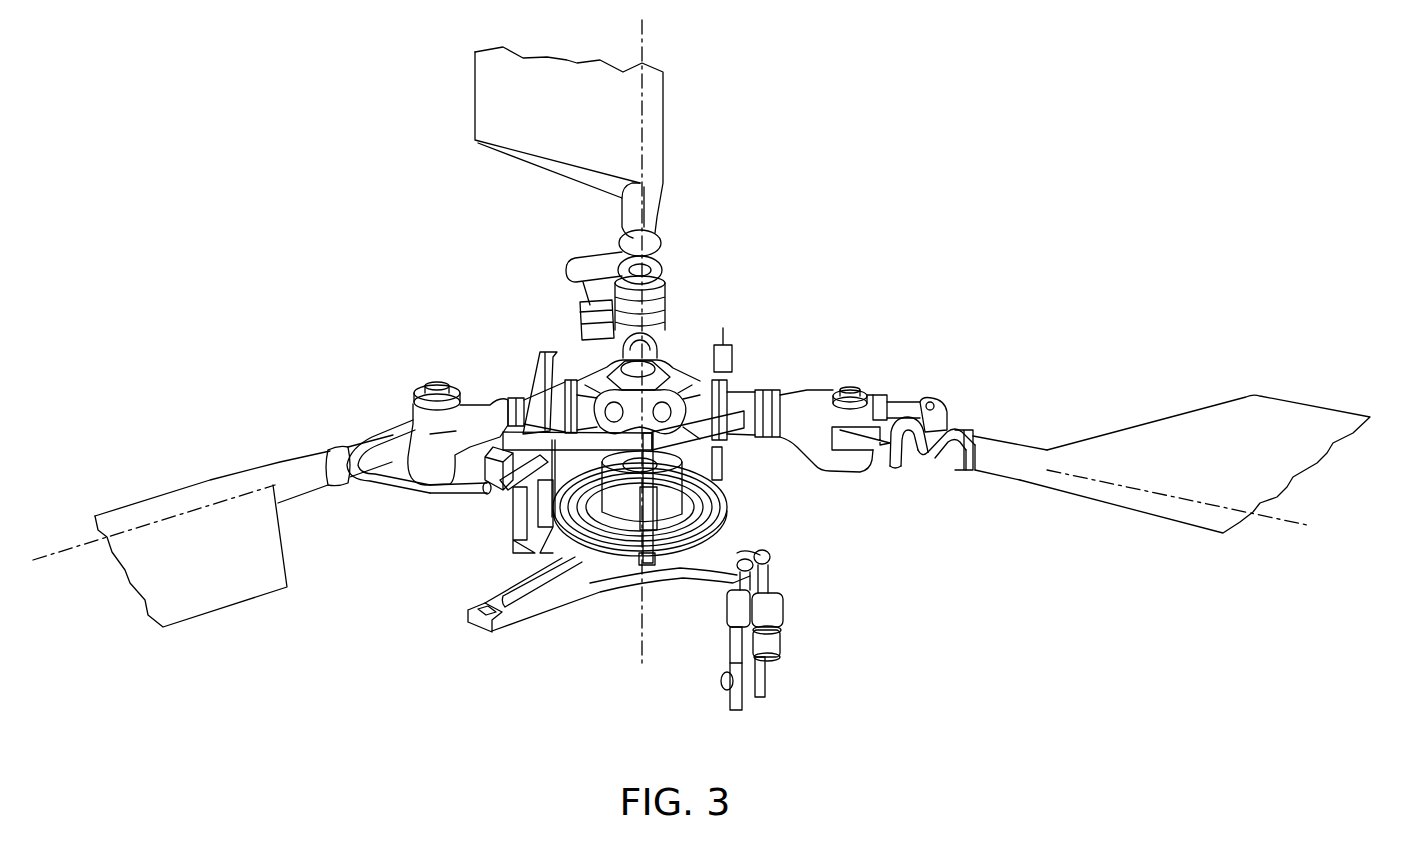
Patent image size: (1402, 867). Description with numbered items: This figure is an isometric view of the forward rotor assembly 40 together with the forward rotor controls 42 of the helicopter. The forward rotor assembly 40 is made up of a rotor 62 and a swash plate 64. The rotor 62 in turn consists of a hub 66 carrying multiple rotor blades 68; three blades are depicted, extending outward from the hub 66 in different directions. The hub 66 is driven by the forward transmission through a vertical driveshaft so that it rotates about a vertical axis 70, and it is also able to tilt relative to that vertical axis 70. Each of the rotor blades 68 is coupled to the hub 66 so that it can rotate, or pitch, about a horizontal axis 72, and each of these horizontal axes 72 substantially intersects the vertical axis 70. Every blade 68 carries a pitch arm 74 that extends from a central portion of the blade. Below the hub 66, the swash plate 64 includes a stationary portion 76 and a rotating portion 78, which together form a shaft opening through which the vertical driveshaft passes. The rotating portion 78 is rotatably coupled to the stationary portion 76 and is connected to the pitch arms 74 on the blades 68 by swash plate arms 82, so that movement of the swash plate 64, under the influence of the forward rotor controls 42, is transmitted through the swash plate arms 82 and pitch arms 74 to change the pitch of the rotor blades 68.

The forward rotor assembly 40 is at (793, 302).
The forward rotor controls 42 is at (795, 637).
The rotor 62 is at (555, 331).
The swash plate 64 is at (500, 590).
The hub 66 is at (675, 365).
The rotor blades 68 is at (558, 67).
The vertical axis 70 is at (642, 636).
The horizontal axes 72 is at (645, 36).
The pitch arm 74 is at (717, 340).
The stationary portion 76 is at (522, 618).
The rotating portion 78 is at (725, 495).
The swash plate arms 82 is at (722, 435).